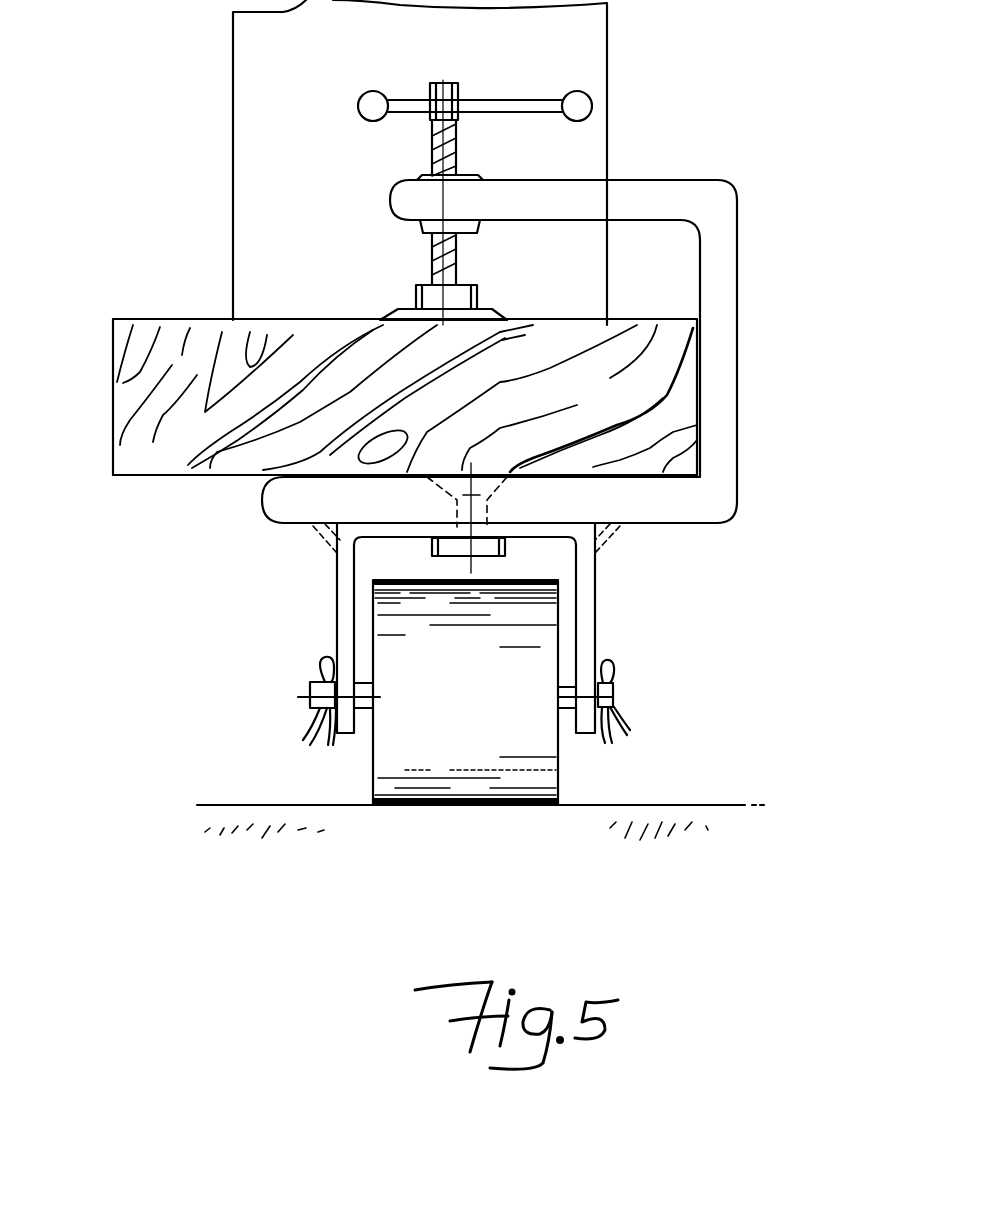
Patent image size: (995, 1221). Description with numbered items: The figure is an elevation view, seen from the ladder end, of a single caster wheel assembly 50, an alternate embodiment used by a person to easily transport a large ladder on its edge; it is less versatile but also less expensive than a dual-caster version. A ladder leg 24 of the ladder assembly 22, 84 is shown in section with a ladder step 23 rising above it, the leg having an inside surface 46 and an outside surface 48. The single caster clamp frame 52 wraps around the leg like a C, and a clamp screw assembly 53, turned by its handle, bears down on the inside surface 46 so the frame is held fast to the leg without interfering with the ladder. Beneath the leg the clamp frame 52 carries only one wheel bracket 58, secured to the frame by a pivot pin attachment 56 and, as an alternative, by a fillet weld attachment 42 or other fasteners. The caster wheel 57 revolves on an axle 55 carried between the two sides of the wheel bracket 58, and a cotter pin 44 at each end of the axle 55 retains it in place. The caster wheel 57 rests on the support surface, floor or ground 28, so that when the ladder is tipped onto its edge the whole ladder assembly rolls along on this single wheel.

The ladder step 23 is at (233, 69).
The ladder assembly 22 is at (180, 168).
The clamp mounting assembly 84 is at (109, 153).
The ladder leg 24 is at (128, 350).
The inside surface of ladder leg 46 is at (272, 320).
The clamp screw assembly 53 is at (460, 150).
The single caster wheel assembly 50 is at (763, 194).
The single caster clamp frame 52 is at (738, 280).
The alternative fillet weld attachment 42 is at (313, 527).
The outside surface of ladder leg 48 is at (132, 475).
The wheel bracket 58 is at (595, 592).
The pivot pin attachment 56 is at (430, 555).
The cotter pin 44 is at (310, 723).
The axle 55 is at (310, 697).
The caster wheel 57 is at (558, 765).
The support surface, floor or ground 28 is at (673, 805).